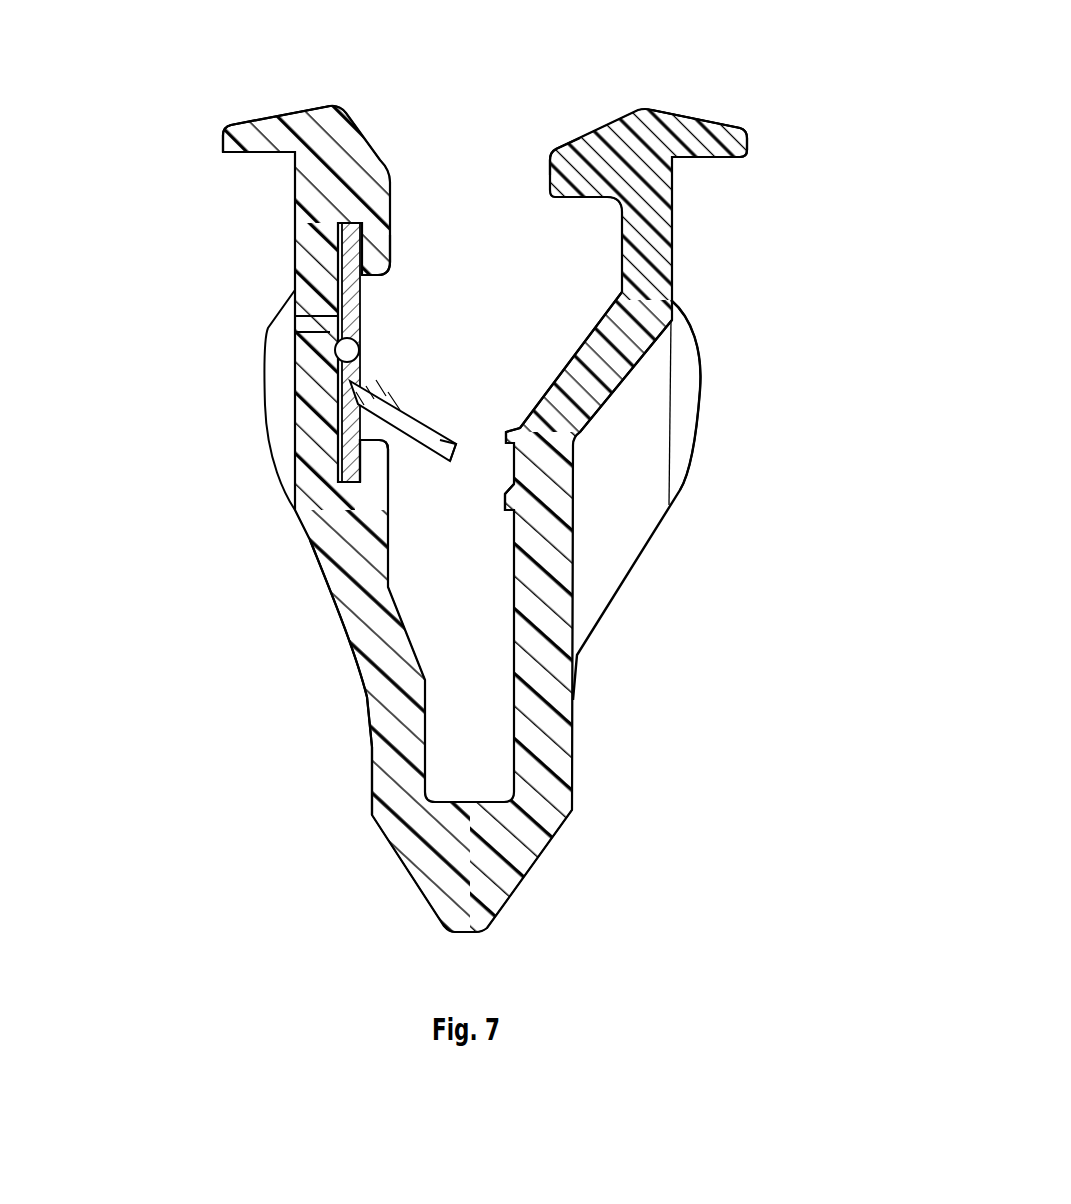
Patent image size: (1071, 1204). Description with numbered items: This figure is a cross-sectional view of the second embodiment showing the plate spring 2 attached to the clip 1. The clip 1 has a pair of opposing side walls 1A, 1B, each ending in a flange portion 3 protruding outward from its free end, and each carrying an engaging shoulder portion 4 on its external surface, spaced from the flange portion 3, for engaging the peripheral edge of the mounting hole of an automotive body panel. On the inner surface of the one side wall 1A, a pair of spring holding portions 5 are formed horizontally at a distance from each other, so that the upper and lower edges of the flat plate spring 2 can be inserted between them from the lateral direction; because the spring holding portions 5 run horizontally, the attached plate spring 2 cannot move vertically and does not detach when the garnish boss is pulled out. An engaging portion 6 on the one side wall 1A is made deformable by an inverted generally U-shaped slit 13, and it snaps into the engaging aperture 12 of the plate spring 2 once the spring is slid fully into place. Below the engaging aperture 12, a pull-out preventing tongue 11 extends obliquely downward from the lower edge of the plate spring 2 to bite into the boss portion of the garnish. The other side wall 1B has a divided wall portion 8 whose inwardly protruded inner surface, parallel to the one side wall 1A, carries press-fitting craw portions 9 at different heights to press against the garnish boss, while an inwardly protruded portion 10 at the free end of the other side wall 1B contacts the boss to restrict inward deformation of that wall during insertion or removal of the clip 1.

The clip 1 is at (778, 190).
The one side wall 1A is at (364, 672).
The other side wall 1B is at (593, 647).
The plate spring 2 is at (343, 245).
The flange portion 3 is at (236, 131).
The engaging shoulder portion 4 is at (283, 298).
The spring holding portion 5 is at (383, 237).
The engaging portion 6 is at (340, 340).
The divided wall portion 8 is at (570, 347).
The press-fitting craw portion 9 is at (523, 430).
The inwardly protruded portion 10 is at (561, 156).
The pull-out preventing tongue 11 is at (420, 437).
The engaging aperture 12 is at (344, 350).
The inverted generally U-shaped slit 13 is at (338, 338).